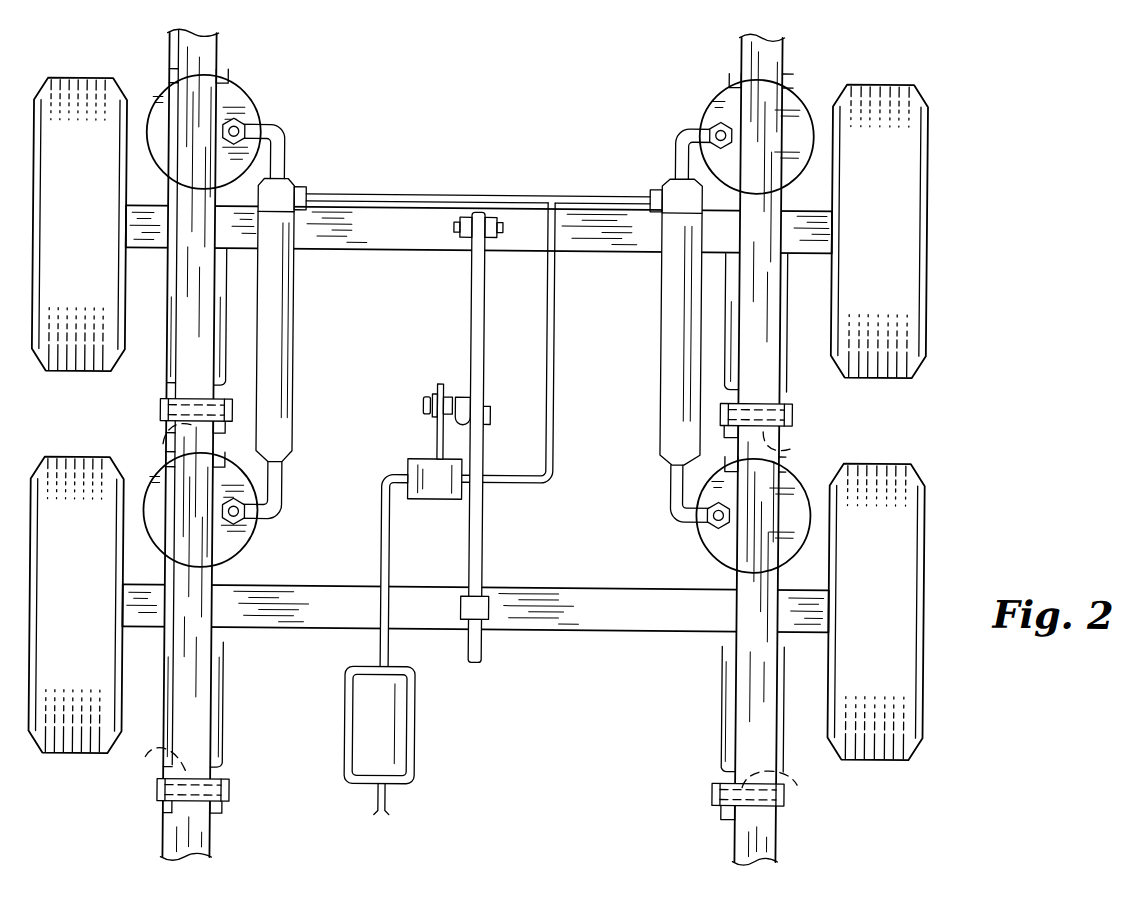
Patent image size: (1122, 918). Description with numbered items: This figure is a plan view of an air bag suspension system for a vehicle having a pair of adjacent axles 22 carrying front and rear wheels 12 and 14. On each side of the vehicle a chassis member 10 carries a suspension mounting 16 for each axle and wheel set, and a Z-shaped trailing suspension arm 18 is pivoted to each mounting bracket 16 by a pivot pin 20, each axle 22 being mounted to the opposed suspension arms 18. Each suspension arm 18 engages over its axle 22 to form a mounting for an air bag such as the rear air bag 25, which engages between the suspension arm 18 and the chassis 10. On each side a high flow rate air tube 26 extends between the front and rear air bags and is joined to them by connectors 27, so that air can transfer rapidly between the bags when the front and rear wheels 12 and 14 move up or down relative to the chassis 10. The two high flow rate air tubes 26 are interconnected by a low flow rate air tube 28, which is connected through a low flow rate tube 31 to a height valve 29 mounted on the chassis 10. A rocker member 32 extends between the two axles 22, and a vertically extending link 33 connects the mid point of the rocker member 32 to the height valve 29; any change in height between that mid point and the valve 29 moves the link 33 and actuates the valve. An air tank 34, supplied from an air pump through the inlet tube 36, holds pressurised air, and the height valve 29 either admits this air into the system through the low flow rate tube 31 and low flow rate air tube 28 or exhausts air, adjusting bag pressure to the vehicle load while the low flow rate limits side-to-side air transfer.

The chassis member 10 is at (213, 52).
The front wheel 12 is at (63, 627).
The rear wheel 14 is at (60, 243).
The suspension mounting 16 is at (170, 401).
The trailing suspension arm 18 is at (173, 350).
The pivot pin 20 is at (163, 447).
The axle 22 is at (350, 252).
The rear air bag 25 is at (249, 106).
The high flow rate air tube 26 is at (282, 343).
The connector 27 is at (278, 130).
The low flow rate air tube 28 is at (490, 196).
The height valve 29 is at (437, 490).
The low flow rate tube 31 is at (553, 424).
The rocker member 32 is at (481, 283).
The link 33 is at (461, 399).
The air tank 34 is at (410, 720).
The inlet tube 36 is at (388, 801).